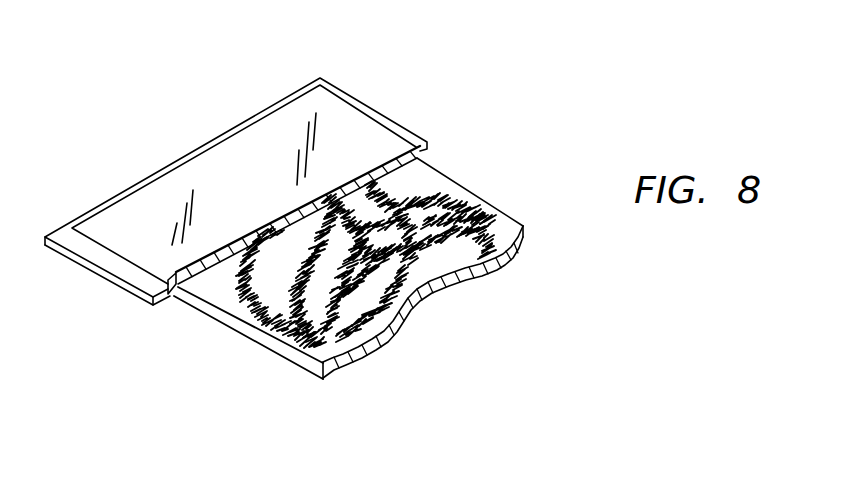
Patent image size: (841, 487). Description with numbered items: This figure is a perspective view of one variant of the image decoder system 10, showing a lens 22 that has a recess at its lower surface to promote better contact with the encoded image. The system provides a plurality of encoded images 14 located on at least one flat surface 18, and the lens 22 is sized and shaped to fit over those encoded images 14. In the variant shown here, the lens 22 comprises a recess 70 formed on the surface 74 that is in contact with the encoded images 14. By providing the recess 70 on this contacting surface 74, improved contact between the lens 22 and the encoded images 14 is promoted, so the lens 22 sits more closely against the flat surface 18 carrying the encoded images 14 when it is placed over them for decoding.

The image decoder system 10 is at (588, 147).
The encoded images 14 is at (394, 262).
The flat surface 18 is at (527, 233).
The lens 22 is at (345, 137).
The recess 70 is at (386, 166).
The surface 74 is at (208, 259).